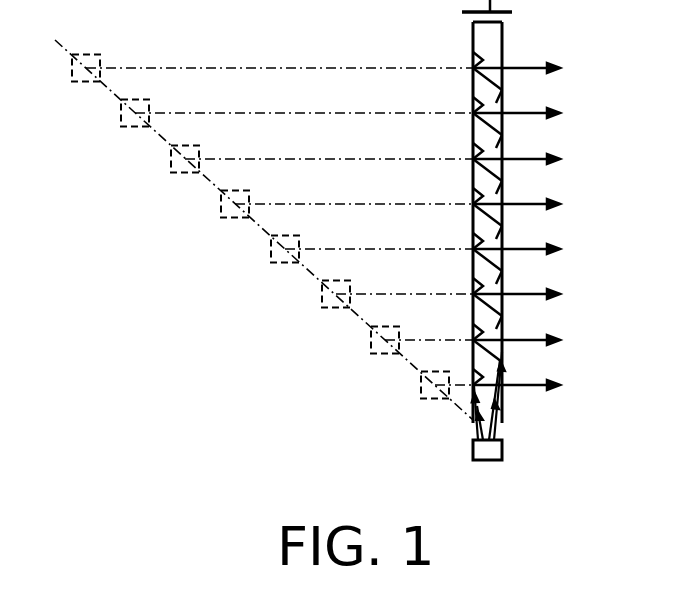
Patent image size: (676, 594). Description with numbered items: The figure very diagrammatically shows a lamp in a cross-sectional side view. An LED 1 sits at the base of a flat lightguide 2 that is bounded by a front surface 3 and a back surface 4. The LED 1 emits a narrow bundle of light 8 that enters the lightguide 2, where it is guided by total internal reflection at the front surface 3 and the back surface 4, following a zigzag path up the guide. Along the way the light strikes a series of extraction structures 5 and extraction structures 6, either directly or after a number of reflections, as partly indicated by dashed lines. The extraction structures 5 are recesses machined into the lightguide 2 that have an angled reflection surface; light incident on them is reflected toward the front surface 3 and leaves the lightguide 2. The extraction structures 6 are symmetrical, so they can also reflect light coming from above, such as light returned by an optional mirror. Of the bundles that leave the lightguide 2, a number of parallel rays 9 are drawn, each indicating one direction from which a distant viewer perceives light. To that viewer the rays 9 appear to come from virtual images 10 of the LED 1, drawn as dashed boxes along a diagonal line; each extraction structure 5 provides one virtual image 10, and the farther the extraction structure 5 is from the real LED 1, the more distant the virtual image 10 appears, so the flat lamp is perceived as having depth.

The LED 1 is at (496, 452).
The lightguide 2 is at (498, 406).
The front surface 3 is at (502, 38).
The back surface 4 is at (473, 34).
The extraction structures 5 is at (473, 294).
The extraction structures 6 is at (473, 68).
The bundle of light 8 is at (473, 430).
The parallel rays 9 is at (527, 295).
The virtual images 10 is at (337, 310).